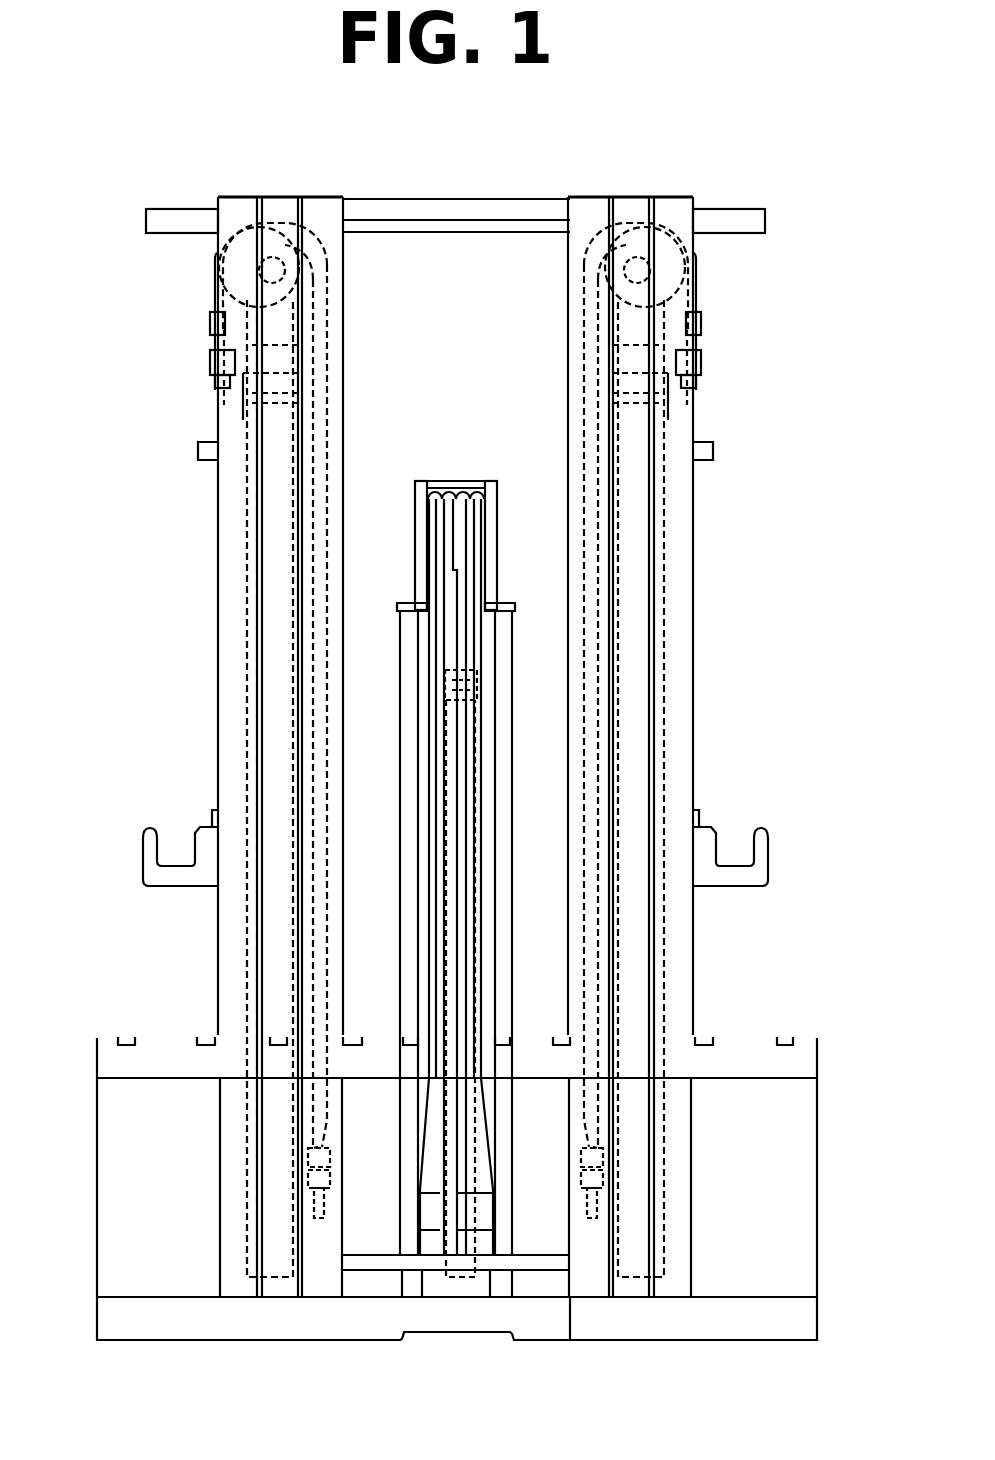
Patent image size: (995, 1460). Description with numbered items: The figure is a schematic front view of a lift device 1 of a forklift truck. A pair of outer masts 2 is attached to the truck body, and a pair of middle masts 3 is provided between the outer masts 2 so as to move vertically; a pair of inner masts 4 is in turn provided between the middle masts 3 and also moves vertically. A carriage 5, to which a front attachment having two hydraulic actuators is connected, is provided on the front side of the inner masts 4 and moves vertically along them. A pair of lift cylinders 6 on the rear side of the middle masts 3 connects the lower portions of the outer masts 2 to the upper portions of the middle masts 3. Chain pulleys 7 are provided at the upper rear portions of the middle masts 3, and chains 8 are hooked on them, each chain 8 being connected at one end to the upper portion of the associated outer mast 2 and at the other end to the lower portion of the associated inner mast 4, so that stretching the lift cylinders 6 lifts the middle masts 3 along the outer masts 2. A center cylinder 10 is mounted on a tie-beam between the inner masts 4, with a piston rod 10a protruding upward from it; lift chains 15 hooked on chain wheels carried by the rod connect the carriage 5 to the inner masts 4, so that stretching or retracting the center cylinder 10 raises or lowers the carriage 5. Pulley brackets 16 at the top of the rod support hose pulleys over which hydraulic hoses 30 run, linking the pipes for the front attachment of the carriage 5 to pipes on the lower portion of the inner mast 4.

The lift device 1 is at (784, 200).
The outer masts 2 is at (240, 205).
The middle masts 3 is at (281, 205).
The inner masts 4 is at (326, 205).
The carriage 5 is at (457, 1312).
The lift cylinders 6 is at (247, 950).
The chain pulleys 7 is at (218, 245).
The chains 8 is at (215, 323).
The center cylinder 10 is at (480, 787).
The piston rod 10a is at (477, 692).
The lift chains 15 is at (410, 745).
The pulley brackets 16 is at (430, 503).
The hydraulic hoses 30 is at (437, 522).